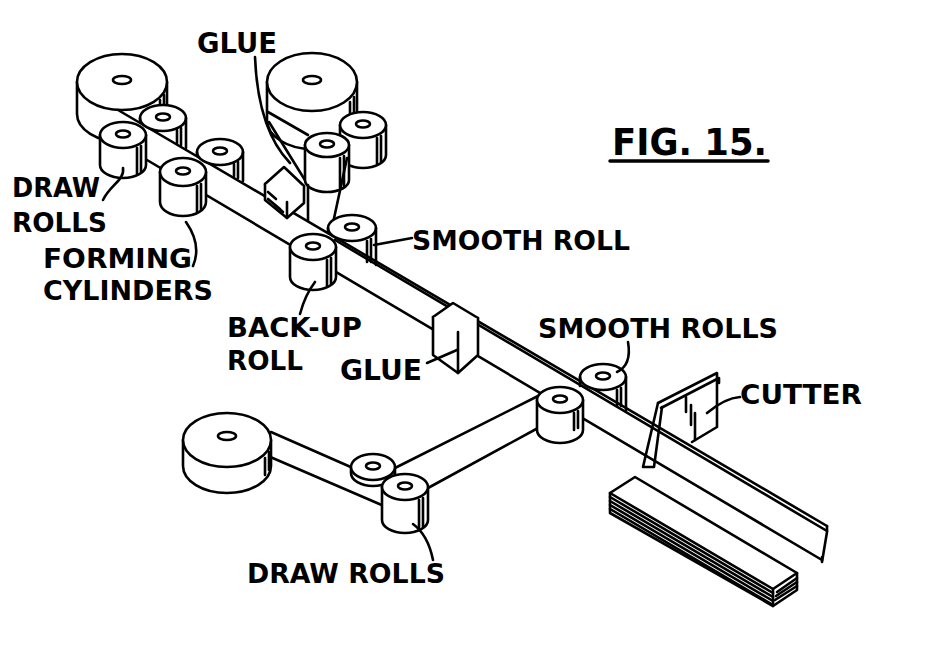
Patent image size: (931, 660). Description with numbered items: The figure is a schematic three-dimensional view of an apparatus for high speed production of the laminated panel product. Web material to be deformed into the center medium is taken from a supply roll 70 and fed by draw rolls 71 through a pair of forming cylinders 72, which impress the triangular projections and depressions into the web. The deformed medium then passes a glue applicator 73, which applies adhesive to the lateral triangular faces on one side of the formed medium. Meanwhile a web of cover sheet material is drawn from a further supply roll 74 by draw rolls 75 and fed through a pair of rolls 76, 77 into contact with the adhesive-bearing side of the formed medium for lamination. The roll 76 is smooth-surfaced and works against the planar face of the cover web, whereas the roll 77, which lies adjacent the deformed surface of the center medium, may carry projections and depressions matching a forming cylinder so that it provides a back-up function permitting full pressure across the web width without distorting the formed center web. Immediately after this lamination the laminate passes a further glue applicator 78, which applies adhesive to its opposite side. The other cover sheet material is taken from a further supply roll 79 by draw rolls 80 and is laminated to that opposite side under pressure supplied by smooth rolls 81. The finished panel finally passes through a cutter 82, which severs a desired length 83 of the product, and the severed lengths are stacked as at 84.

The supply roll 70 is at (148, 72).
The draw rolls 71 is at (173, 121).
The forming cylinders 72 is at (232, 150).
The glue applicator 73 is at (289, 222).
The supply roll 74 is at (338, 82).
The draw rolls 75 is at (400, 100).
The roll 76 is at (358, 226).
The roll 77 is at (298, 272).
The glue applicator 78 is at (495, 312).
The supply roll 79 is at (207, 432).
The draw rolls 80 is at (390, 458).
The smooth rolls 81 is at (622, 397).
The cutter 82 is at (718, 380).
The length of finished product 83 is at (740, 492).
The stack of severed lengths 84 is at (737, 553).